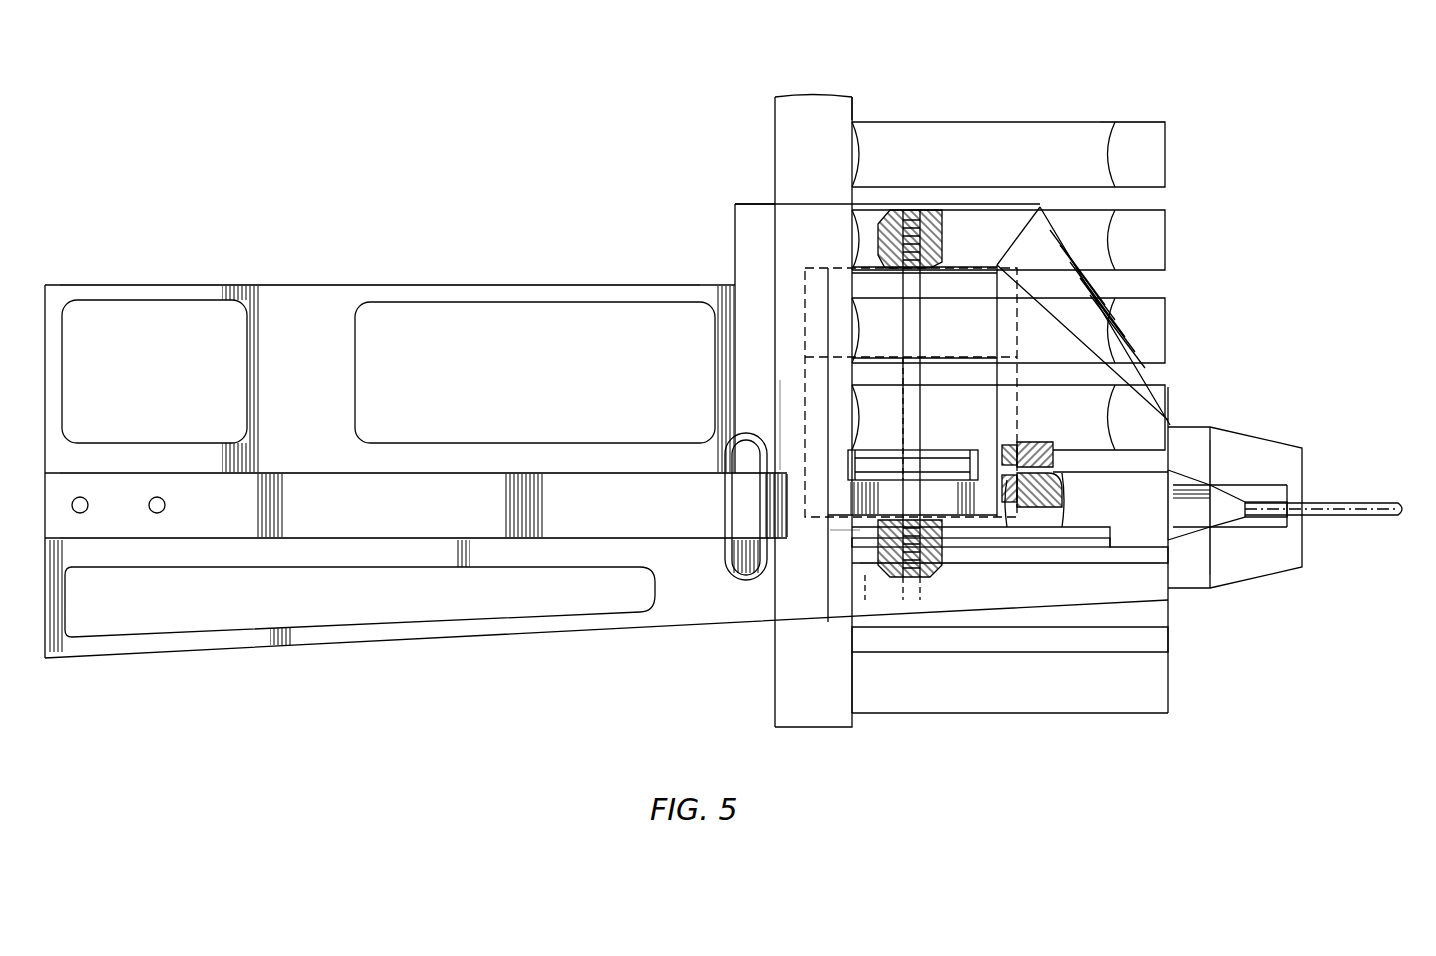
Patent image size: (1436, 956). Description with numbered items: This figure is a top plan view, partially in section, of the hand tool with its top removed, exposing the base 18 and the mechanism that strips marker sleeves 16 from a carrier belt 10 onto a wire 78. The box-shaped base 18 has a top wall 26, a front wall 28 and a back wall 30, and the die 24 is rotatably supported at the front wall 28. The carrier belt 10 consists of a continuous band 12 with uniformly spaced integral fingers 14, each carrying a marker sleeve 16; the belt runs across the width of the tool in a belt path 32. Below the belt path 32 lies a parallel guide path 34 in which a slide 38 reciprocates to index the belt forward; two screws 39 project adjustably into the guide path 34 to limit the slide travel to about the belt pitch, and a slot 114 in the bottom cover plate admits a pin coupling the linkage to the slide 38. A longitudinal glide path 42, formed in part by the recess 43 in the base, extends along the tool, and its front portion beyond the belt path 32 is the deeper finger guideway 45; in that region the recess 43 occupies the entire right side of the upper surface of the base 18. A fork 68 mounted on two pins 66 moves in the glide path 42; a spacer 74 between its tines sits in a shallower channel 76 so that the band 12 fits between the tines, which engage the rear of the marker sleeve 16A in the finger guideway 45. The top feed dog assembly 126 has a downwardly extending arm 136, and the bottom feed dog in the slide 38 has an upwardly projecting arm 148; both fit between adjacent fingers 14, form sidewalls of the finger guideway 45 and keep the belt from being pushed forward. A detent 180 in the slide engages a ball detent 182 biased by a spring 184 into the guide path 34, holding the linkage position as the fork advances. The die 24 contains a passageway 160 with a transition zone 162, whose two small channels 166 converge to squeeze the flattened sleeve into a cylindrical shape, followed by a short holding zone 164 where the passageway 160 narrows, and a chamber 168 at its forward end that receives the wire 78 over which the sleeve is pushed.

The carrier belt 10 is at (832, 92).
The continuous band 12 is at (775, 145).
The integral fingers 14 is at (1165, 175).
The marker sleeve 16 is at (1075, 120).
The marker sleeve 16A is at (1085, 540).
The base 18 is at (602, 630).
The die 24 is at (1302, 448).
The top wall 26 is at (285, 300).
The front wall 28 is at (1168, 410).
The back wall 30 is at (45, 290).
The belt path 32 is at (790, 408).
The guide path 34 is at (955, 300).
The slide 38 is at (830, 375).
The screws 39 is at (935, 215).
The glide path 42 is at (440, 542).
The recess 43 is at (516, 542).
The finger guideway 45 is at (845, 530).
The pins 66 is at (90, 512).
The fork 68 is at (298, 542).
The spacer 74 is at (740, 575).
The channel 76 is at (735, 548).
The wire 78 is at (1372, 505).
The slot 114 is at (912, 362).
The top feed dog assembly 126 is at (1100, 553).
The downwardly extending arm 136 is at (872, 560).
The upwardly projecting arm 148 is at (975, 462).
The passageway 160 is at (1212, 476).
The transition zone 162 is at (1168, 503).
The holding zone 164 is at (1205, 510).
The small channels 166 is at (1180, 478).
The chamber 168 is at (1290, 520).
The detent 180 is at (1005, 527).
The ball detent 182 is at (1035, 445).
The spring 184 is at (1050, 465).